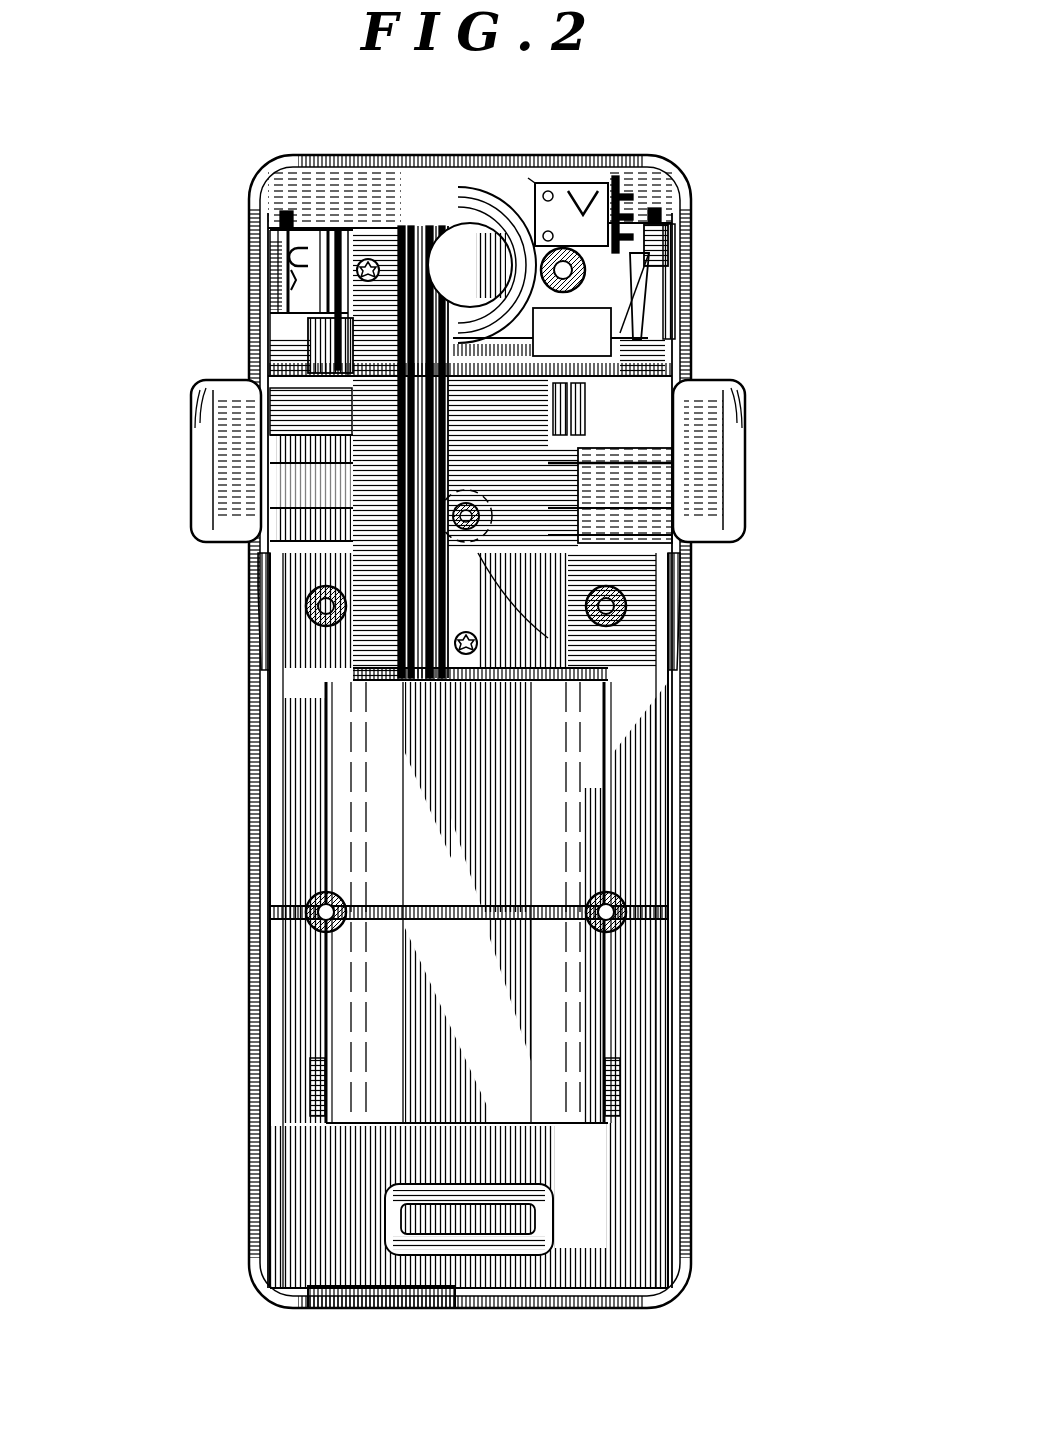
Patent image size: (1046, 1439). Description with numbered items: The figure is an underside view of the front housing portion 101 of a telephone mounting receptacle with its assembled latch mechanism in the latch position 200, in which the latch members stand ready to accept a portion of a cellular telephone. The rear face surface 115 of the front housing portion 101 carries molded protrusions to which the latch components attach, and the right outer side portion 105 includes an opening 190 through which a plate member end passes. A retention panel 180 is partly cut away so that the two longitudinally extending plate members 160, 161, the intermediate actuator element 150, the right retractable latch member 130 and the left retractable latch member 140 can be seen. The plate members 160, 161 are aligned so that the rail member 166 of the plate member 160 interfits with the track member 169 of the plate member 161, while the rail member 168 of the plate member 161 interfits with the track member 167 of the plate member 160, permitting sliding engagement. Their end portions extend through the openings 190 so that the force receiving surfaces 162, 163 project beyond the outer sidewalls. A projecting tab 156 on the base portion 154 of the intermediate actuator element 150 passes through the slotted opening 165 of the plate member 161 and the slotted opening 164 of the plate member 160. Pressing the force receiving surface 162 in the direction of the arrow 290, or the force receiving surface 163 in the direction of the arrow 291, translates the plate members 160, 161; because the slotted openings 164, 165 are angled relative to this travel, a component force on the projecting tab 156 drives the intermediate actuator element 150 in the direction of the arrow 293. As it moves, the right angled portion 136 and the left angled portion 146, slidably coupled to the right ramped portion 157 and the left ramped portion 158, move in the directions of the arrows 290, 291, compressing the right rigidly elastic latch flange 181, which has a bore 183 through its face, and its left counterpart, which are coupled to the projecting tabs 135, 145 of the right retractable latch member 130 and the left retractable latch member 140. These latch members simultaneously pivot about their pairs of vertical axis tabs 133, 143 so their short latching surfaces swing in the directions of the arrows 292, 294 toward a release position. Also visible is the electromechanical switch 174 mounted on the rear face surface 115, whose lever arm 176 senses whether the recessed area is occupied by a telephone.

The front housing portion 101 is at (655, 136).
The latch position 200 is at (672, 57).
The right outer side portion 105 is at (240, 232).
The vertical axis tabs 133 is at (278, 204).
The right retractable latch member 130 is at (252, 230).
The right rigidly elastic latch flange 181 is at (308, 222).
The bore 183 is at (287, 262).
The right angled portion 136 is at (272, 258).
The projecting tab 135 is at (334, 222).
The right ramped portion 157 is at (336, 314).
The intermediate actuator element 150 is at (300, 396).
The projecting tab 156 is at (460, 540).
The track member 167 is at (572, 518).
The slotted opening 165 is at (532, 456).
The rail member 166 is at (542, 446).
The lever arm 176 is at (537, 176).
The electromechanical switch 174 is at (586, 176).
The left ramped portion 158 is at (602, 329).
The vertical axis tabs 143 is at (648, 210).
The left retractable latch member 140 is at (660, 229).
The left angled portion 146 is at (668, 270).
The projecting tab 145 is at (660, 297).
The force receiving surface 162 is at (185, 508).
The force receiving surface 163 is at (737, 514).
The longitudinally extending plate member 160 is at (262, 562).
The track member 169 is at (622, 446).
The longitudinally extending plate member 161 is at (642, 562).
The slotted opening 164 is at (456, 517).
The opening 190 is at (251, 573).
The rail member 168 is at (632, 547).
The base portion 154 is at (566, 642).
The retention panel 180 is at (546, 642).
The rear face surface 115 is at (625, 1177).
The arrow 293 is at (458, 136).
The arrow 292 is at (195, 248).
The arrow 294 is at (690, 252).
The arrow 290 is at (172, 447).
The arrow 291 is at (752, 453).